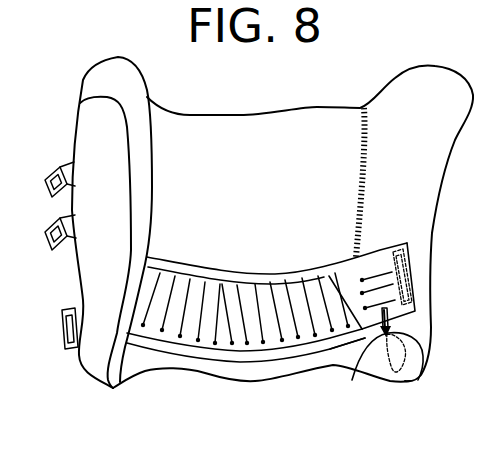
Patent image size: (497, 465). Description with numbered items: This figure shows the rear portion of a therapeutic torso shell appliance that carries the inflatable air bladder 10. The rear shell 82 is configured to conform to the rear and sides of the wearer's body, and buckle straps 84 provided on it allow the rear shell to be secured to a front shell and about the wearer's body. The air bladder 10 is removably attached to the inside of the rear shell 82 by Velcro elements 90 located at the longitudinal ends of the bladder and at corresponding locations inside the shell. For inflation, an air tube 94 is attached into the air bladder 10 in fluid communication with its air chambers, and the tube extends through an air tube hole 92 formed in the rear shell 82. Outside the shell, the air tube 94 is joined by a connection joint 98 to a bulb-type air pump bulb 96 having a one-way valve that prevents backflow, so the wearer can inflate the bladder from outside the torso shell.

The air bladder 10 is at (207, 250).
The rear shell 82 is at (68, 384).
The buckle straps 84 is at (51, 279).
The Velcro elements 90 is at (413, 296).
The air tube hole 92 is at (384, 332).
The air tube 94 is at (383, 320).
The air pump bulb 96 is at (398, 372).
The connection joint 98 is at (420, 370).